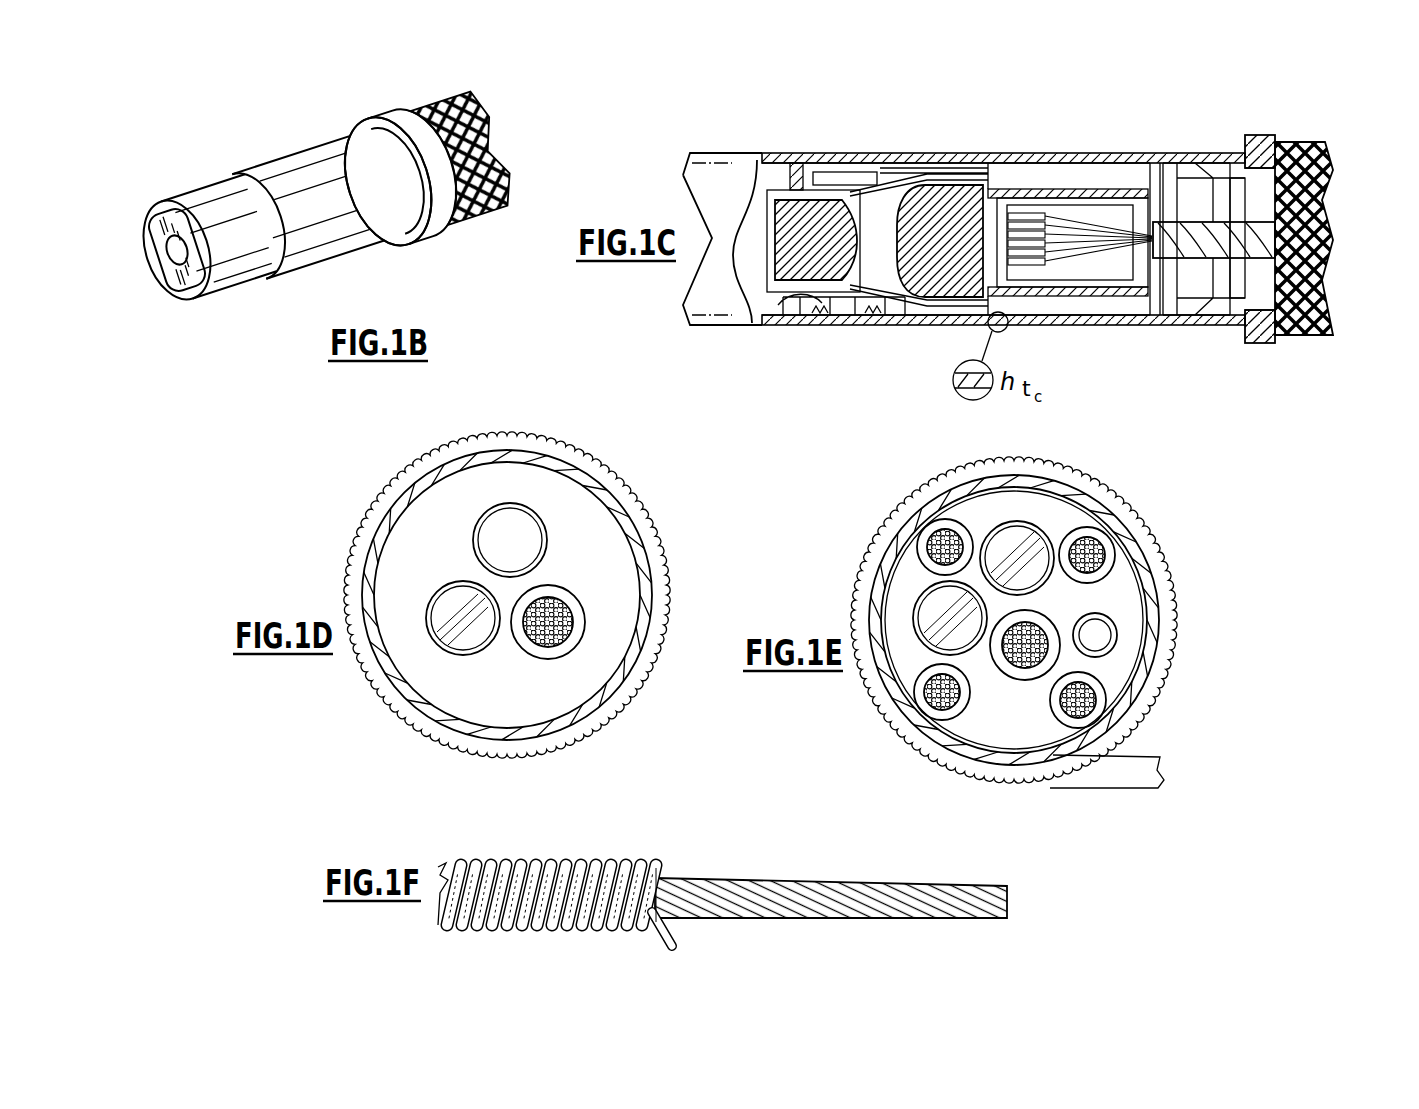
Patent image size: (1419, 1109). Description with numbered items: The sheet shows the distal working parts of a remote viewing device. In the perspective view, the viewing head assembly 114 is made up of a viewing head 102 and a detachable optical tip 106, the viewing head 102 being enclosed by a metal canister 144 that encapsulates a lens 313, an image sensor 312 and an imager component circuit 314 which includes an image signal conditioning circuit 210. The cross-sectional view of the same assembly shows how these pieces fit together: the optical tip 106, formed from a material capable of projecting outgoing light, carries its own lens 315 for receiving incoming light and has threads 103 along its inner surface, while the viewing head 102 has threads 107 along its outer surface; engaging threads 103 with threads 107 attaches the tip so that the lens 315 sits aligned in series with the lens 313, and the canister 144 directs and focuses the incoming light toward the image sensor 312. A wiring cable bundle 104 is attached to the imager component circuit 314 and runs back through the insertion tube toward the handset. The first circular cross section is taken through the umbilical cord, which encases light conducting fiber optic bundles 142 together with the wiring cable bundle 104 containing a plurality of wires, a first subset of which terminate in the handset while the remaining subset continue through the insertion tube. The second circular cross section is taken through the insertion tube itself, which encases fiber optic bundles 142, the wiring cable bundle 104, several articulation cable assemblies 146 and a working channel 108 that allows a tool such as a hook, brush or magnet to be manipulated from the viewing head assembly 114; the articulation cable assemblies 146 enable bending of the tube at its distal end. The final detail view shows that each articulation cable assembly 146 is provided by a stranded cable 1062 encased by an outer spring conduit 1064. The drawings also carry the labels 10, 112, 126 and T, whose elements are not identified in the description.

In FIG. 1C, the optical fiber 10 is at (1254, 218).
In FIG. 1B, the viewing head 102 is at (395, 236).
In FIG. 1C, the viewing head 102 is at (1006, 151).
In FIG. 1C, the threads 103 is at (836, 316).
In FIG. 1D, the wiring cable bundle 104 is at (557, 586).
In FIG. 1E, the wiring cable bundle 104 is at (1025, 681).
In FIG. 1B, the detachable optical tip 106 is at (233, 300).
In FIG. 1C, the detachable optical tip 106 is at (834, 151).
In FIG. 1C, the threads 107 is at (795, 318).
In FIG. 1E, the working channel 108 is at (1118, 636).
In FIG. 1C, the braided outer sheath 112 is at (1301, 150).
In FIG. 1E, the braided outer sheath 112 is at (1131, 487).
In FIG. 1B, the viewing head assembly 114 is at (227, 172).
In FIG. 1C, the viewing head assembly 114 is at (1197, 127).
In FIG. 1D, the catheter body 126 is at (621, 466).
In FIG. 1D, the light conducting fiber optic bundles 142 is at (476, 566).
In FIG. 1E, the light conducting fiber optic bundles 142 is at (973, 526).
In FIG. 1B, the metal canister 144 is at (322, 250).
In FIG. 1C, the metal canister 144 is at (1084, 153).
In FIG. 1E, the articulation cable assemblies 146 is at (917, 547).
In FIG. 1F, the articulation cable assemblies 146 is at (672, 868).
In FIG. 1C, the image signal conditioning circuit 210 is at (1124, 281).
In FIG. 1C, the image sensor 312 is at (986, 190).
In FIG. 1C, the lens 313 is at (905, 316).
In FIG. 1C, the imager component circuit 314 is at (1128, 290).
In FIG. 1C, the lens 315 is at (777, 236).
In FIG. 1F, the stranded cable 1062 is at (918, 893).
In FIG. 1F, the outer spring conduit 1064 is at (551, 877).
In FIG. 1E, the tether T is at (1169, 761).